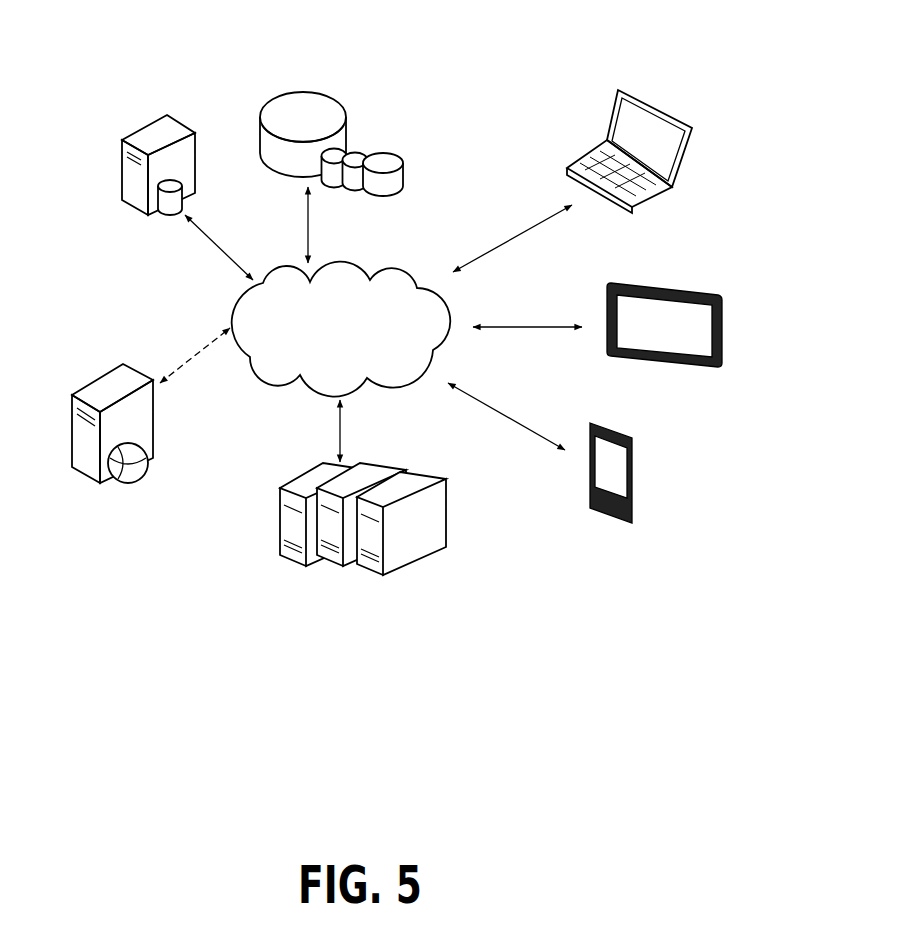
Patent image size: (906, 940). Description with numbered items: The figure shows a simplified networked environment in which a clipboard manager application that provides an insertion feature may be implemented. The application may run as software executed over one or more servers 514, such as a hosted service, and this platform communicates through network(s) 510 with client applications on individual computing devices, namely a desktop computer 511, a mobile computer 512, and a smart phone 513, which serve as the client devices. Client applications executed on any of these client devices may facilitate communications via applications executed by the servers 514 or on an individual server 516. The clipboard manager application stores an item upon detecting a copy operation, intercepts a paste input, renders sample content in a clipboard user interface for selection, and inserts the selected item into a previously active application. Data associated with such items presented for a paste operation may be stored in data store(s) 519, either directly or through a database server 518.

The network(s) 510 is at (347, 250).
The desktop computer 511 is at (664, 92).
The mobile computer 512 is at (697, 268).
The smart phone 513 is at (640, 443).
The servers 514 is at (305, 465).
The individual server 516 is at (92, 373).
The database server 518 is at (158, 227).
The data store(s) 519 is at (320, 68).